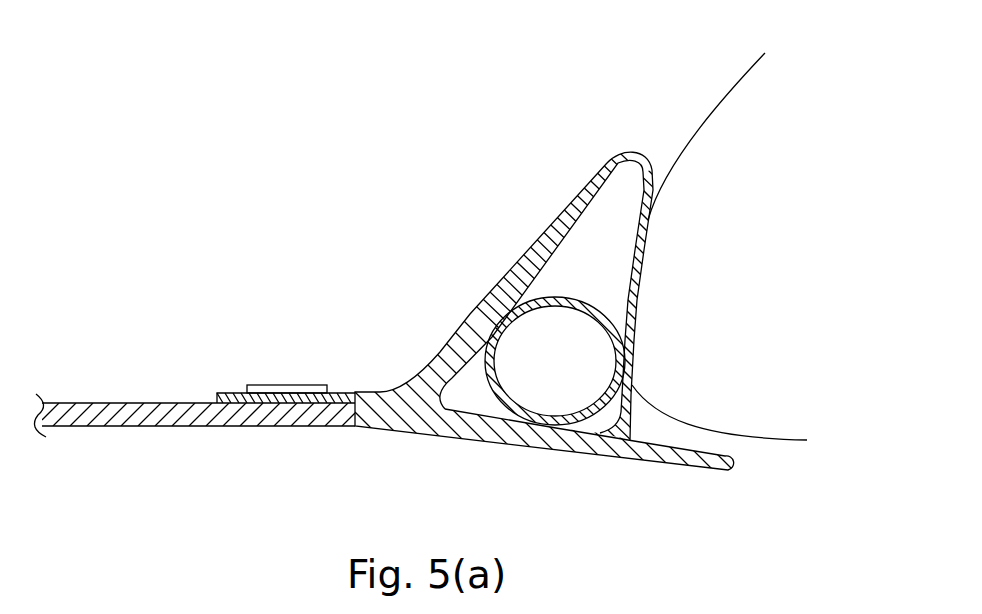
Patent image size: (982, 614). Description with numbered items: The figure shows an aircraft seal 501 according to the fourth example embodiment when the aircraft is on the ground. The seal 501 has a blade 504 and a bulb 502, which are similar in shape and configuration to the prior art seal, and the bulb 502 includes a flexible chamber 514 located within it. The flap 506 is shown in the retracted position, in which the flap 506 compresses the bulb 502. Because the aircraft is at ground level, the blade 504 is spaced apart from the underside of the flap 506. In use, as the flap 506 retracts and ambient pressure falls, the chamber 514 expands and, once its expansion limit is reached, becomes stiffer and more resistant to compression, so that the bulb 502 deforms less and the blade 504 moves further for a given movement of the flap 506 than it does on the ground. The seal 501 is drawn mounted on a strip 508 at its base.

The seal 501 is at (542, 158).
The bulb 502 is at (647, 158).
The blade 504 is at (675, 457).
The flap 506 is at (775, 352).
The substrate strip 508 is at (90, 410).
The flexible chamber 514 is at (585, 348).